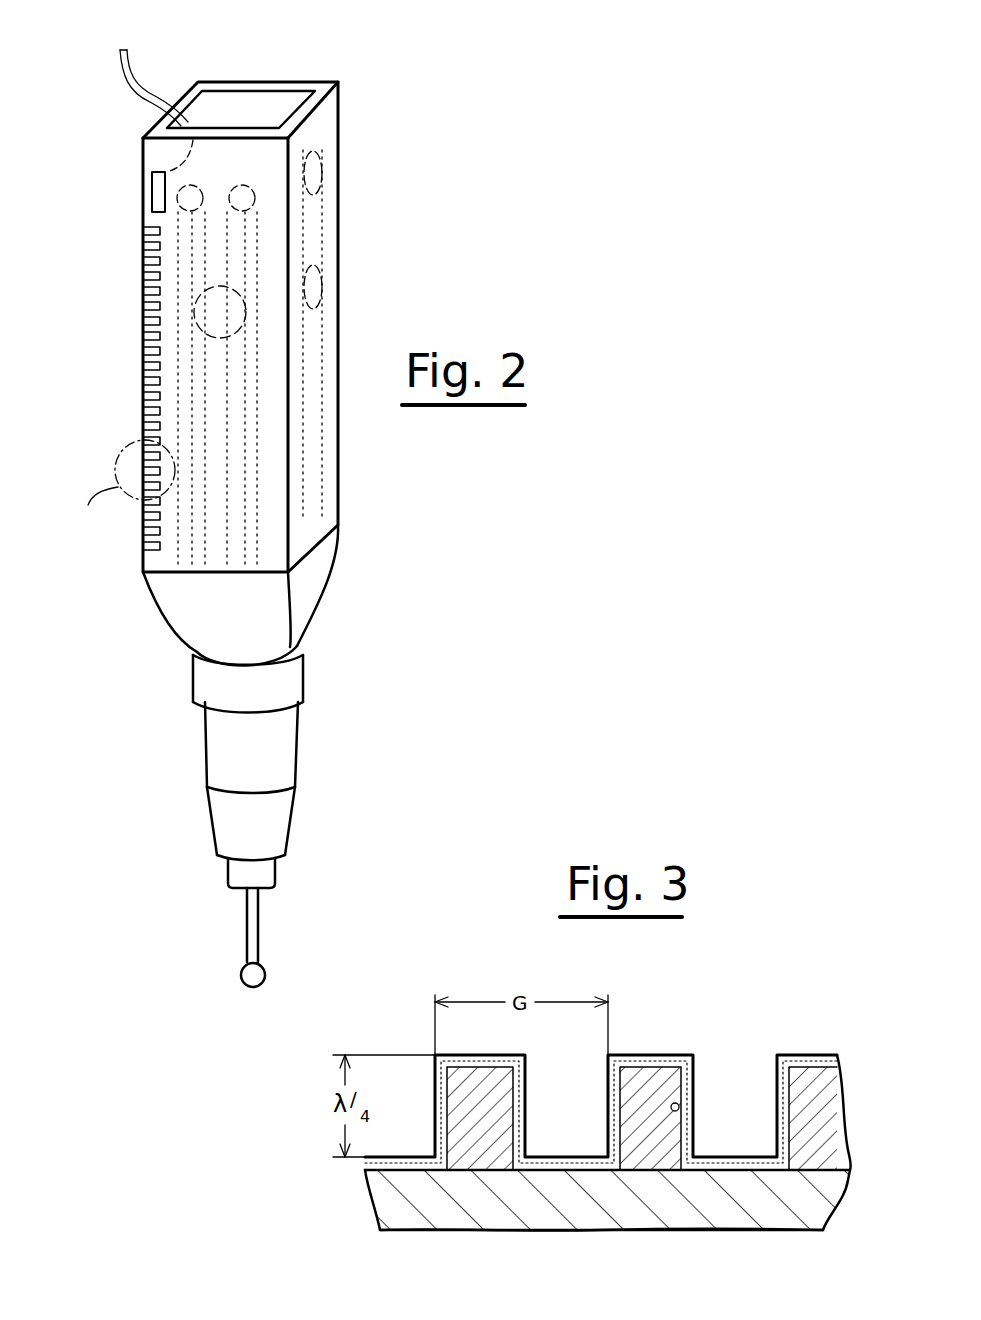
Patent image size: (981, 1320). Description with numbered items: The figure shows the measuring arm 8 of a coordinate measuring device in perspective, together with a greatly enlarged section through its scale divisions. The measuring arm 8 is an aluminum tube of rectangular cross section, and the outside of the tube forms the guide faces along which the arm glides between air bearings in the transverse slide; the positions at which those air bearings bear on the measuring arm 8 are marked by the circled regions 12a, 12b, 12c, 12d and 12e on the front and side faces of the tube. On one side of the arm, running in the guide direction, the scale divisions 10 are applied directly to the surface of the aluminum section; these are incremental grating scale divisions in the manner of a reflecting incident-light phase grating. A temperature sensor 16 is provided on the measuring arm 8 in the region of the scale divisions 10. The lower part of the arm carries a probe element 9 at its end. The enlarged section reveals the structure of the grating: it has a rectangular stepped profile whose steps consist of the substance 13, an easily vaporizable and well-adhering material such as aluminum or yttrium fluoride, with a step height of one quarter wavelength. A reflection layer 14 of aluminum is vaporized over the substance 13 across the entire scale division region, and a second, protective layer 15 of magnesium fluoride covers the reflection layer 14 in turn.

In FIG. 2, the measuring arm 8 is at (300, 80).
In FIG. 3, the measuring arm 8 is at (385, 1205).
In FIG. 2, the pen body 9 is at (275, 762).
In FIG. 2, the scale divisions 10 is at (143, 378).
In FIG. 3, the scale divisions 10 is at (601, 1057).
In FIG. 2, the air bearing support position 12a is at (194, 312).
In FIG. 2, the air bearing support position 12b is at (195, 185).
In FIG. 2, the air bearing support position 12c is at (242, 185).
In FIG. 2, the air bearing support position 12d is at (322, 172).
In FIG. 2, the air bearing support position 12e is at (322, 283).
In FIG. 2, the temperature sensor 16 is at (152, 200).
In FIG. 3, the substance 13 is at (520, 1085).
In FIG. 3, the reflection layer 14 is at (679, 1107).
In FIG. 3, the protective layer 15 is at (690, 1052).